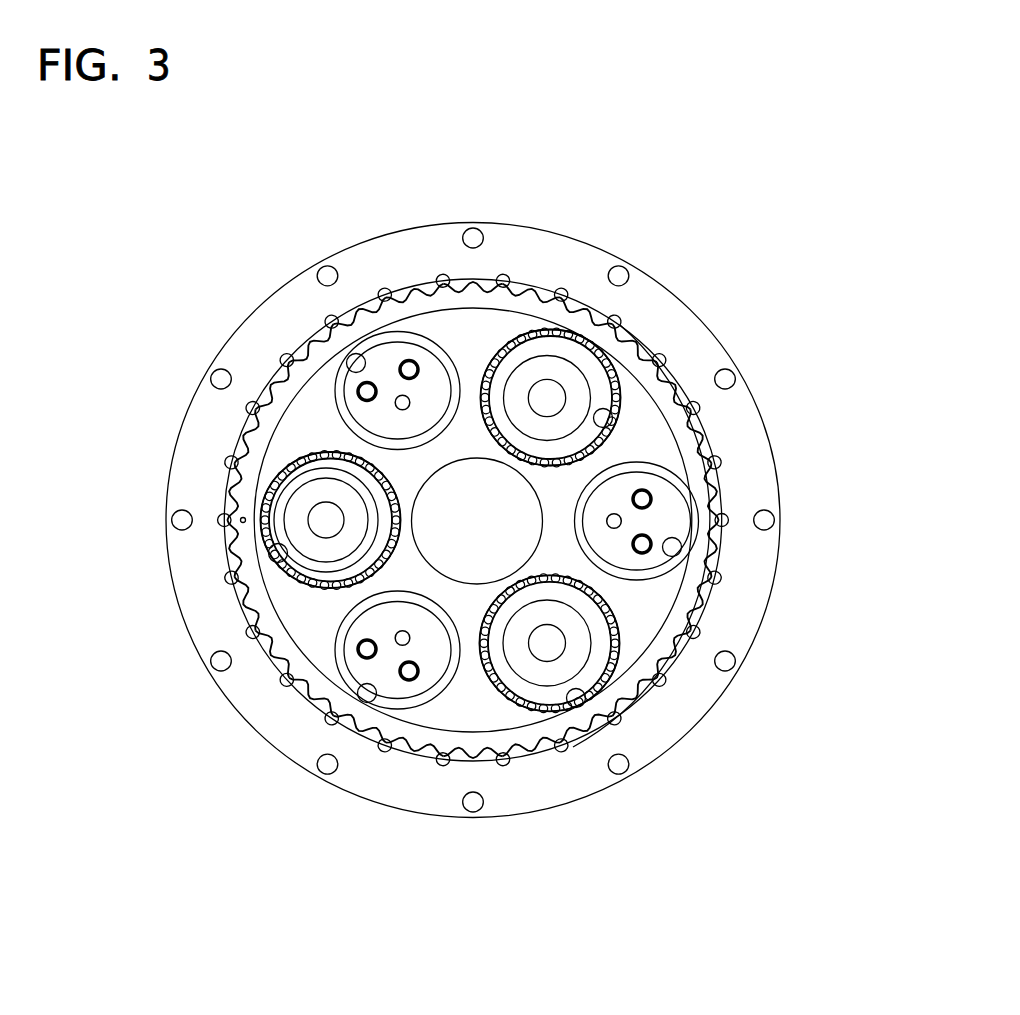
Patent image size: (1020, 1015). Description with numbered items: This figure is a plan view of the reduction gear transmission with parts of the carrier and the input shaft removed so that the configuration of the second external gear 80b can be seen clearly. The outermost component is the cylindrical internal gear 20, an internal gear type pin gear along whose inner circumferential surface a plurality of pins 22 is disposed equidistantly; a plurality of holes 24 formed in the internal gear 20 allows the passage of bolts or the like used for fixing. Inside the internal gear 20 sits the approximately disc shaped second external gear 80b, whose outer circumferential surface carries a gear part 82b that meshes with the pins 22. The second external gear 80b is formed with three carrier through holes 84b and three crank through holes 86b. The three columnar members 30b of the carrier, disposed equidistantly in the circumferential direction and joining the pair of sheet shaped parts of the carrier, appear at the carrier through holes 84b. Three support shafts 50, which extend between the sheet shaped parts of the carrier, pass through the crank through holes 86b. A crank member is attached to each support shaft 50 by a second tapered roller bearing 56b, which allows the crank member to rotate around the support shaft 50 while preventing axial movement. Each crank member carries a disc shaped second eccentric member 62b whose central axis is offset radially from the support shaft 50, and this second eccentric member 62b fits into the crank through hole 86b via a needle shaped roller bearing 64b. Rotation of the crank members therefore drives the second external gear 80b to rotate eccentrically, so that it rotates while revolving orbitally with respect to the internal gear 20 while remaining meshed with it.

The internal gear 20 is at (555, 250).
The pins 22 is at (563, 283).
The holes 24 is at (628, 280).
The columnar members 30b is at (387, 352).
The support shafts 50 is at (326, 518).
The second tapered roller bearing 56b is at (303, 510).
The second eccentric member 62b is at (270, 527).
The needle shaped roller bearing 64b is at (267, 547).
The second external gear 80b is at (460, 322).
The gear part 82b is at (468, 288).
The carrier through holes 84b is at (350, 360).
The crank through holes 86b is at (272, 558).